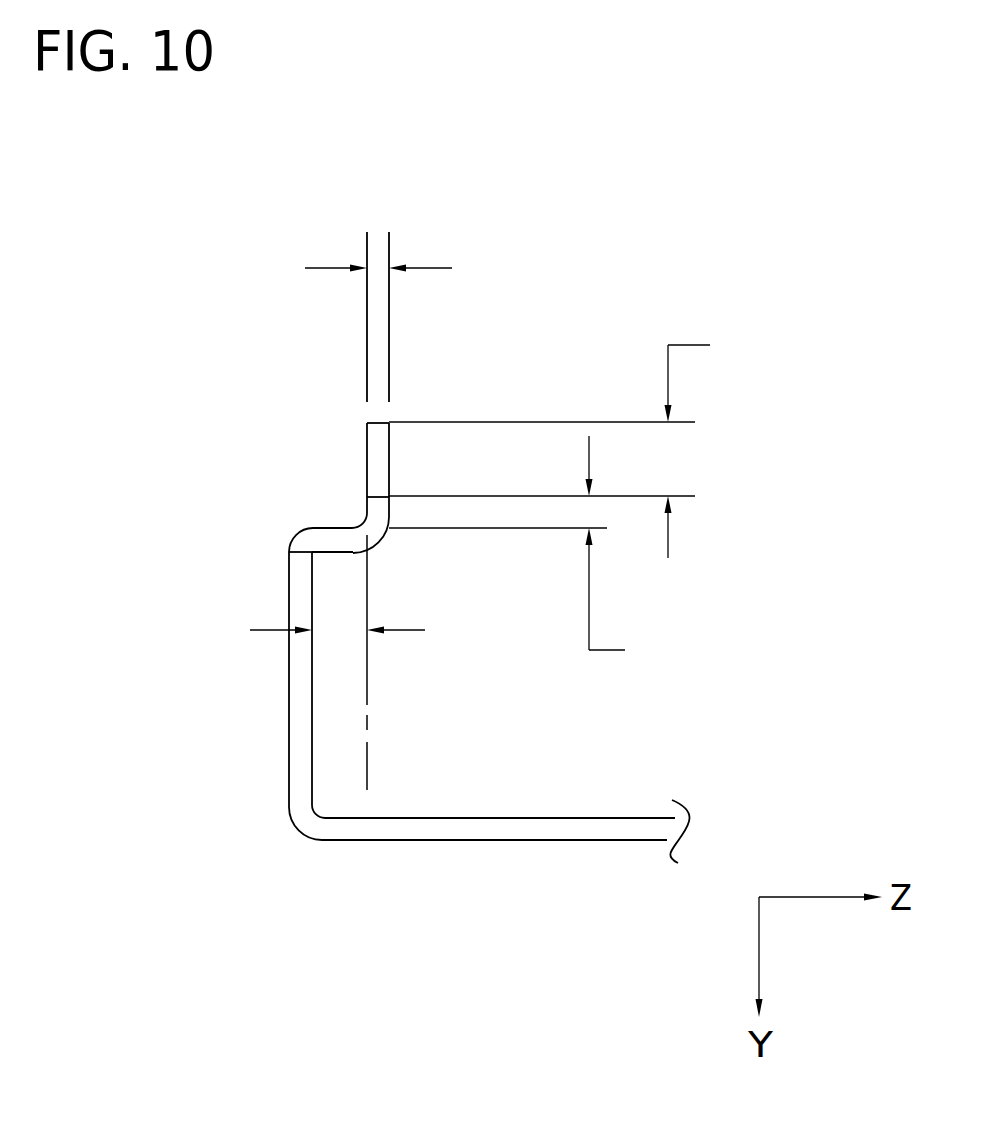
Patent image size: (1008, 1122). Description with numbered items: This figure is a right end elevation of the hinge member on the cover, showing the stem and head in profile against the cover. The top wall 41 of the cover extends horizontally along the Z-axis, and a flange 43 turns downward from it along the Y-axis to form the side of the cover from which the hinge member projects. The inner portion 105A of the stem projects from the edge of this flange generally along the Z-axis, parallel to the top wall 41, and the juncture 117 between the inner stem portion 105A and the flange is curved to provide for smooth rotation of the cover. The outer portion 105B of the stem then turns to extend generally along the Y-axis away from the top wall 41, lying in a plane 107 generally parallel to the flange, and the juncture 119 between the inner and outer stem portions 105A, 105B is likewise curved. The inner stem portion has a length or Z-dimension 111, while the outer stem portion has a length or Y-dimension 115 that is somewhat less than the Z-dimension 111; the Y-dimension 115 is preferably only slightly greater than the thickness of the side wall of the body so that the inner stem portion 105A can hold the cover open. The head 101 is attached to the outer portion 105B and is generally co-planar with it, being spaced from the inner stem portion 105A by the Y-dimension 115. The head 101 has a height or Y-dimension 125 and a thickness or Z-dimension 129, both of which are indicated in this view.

The head 101 is at (367, 447).
The inner portion of the stem 105A is at (340, 552).
The outer portion of the stem 105B is at (367, 508).
The plane 107 is at (367, 763).
The Z-dimension of the inner stem portion 111 is at (370, 630).
The Y-dimension of the outer stem portion 115 is at (636, 553).
The juncture between the inner stem portion and the first flange means 117 is at (307, 543).
The juncture between the inner and outer stem portions 119 is at (378, 538).
The Y-dimension of the head 125 is at (718, 442).
The Z-dimension of the head 129 is at (408, 270).
The top wall 41 is at (465, 840).
The vertical wall 43 is at (290, 757).